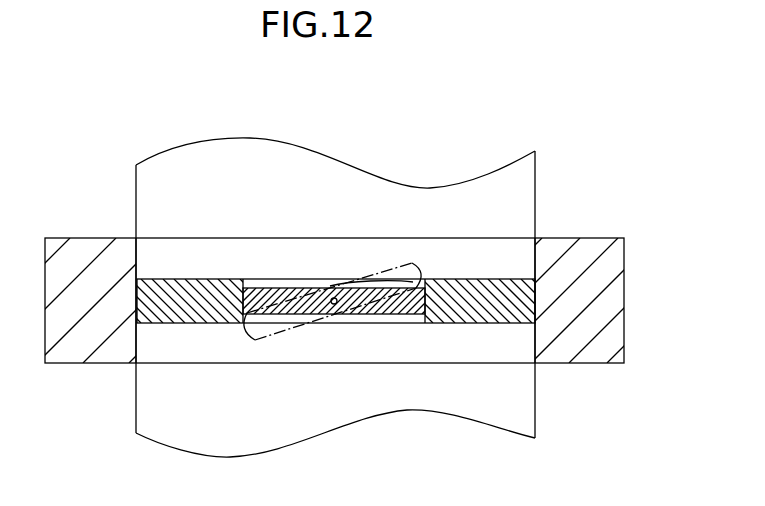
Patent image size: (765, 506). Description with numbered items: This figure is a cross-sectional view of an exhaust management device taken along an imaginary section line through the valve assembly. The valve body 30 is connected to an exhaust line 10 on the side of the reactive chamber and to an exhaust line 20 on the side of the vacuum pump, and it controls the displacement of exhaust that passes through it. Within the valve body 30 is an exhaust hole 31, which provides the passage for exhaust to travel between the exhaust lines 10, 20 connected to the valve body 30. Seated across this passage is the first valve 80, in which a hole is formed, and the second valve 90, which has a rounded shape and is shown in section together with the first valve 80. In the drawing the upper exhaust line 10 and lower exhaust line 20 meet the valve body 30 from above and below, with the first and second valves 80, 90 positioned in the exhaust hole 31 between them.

The exhaust line 10 is at (520, 200).
The exhaust line 20 is at (515, 393).
The valve body 30 is at (595, 313).
The exhaust hole 31 is at (185, 346).
The first valve 80 is at (212, 287).
The second valve 90 is at (400, 314).